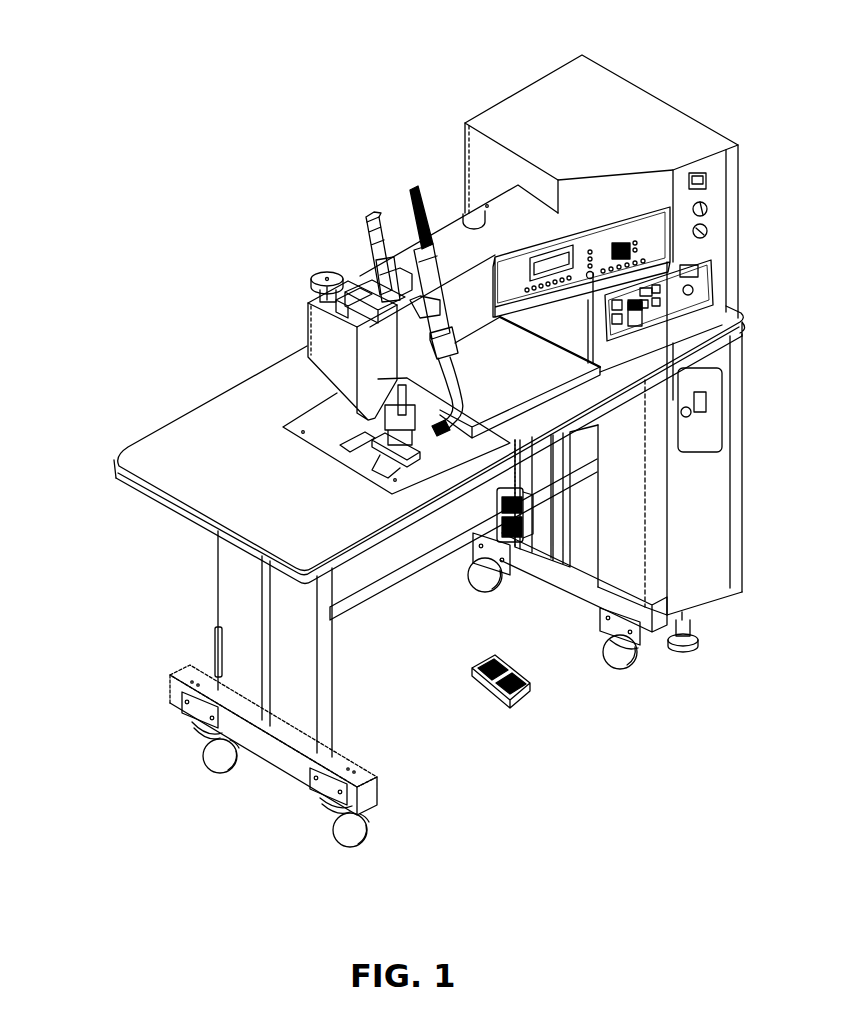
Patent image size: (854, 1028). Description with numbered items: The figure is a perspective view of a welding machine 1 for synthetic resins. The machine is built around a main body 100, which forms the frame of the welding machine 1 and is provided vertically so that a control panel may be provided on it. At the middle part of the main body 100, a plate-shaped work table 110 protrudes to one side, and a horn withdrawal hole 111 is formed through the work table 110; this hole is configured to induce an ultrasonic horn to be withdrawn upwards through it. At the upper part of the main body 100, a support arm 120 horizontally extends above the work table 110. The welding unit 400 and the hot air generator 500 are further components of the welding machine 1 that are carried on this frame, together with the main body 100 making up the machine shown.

The welding machine for synthetic resins 1 is at (142, 98).
The main body 100 is at (647, 113).
The work table 110 is at (173, 462).
The horn withdrawal hole 111 is at (350, 432).
The support arm 120 is at (323, 342).
The welding unit 400 is at (308, 260).
The hot air generator 500 is at (387, 205).